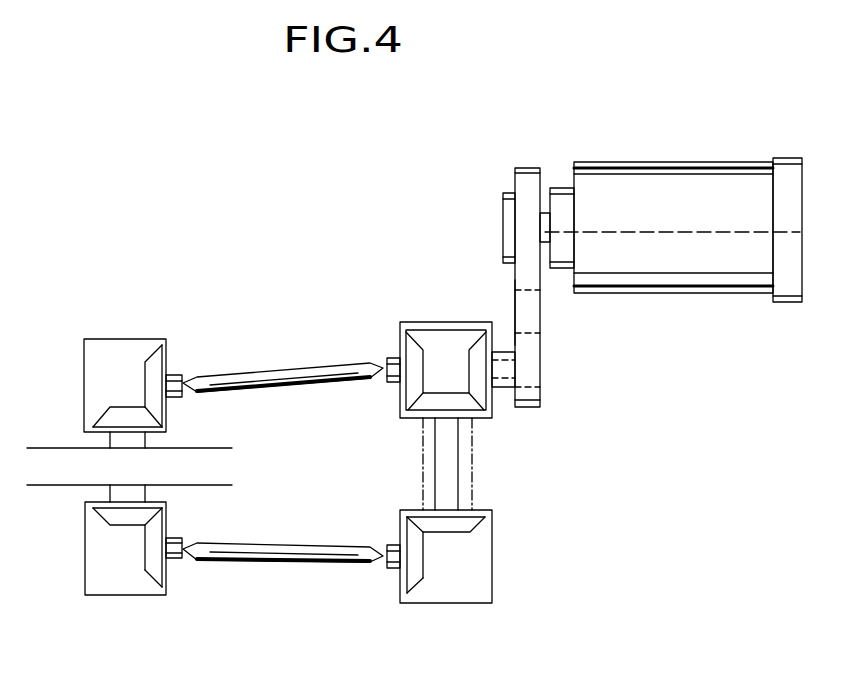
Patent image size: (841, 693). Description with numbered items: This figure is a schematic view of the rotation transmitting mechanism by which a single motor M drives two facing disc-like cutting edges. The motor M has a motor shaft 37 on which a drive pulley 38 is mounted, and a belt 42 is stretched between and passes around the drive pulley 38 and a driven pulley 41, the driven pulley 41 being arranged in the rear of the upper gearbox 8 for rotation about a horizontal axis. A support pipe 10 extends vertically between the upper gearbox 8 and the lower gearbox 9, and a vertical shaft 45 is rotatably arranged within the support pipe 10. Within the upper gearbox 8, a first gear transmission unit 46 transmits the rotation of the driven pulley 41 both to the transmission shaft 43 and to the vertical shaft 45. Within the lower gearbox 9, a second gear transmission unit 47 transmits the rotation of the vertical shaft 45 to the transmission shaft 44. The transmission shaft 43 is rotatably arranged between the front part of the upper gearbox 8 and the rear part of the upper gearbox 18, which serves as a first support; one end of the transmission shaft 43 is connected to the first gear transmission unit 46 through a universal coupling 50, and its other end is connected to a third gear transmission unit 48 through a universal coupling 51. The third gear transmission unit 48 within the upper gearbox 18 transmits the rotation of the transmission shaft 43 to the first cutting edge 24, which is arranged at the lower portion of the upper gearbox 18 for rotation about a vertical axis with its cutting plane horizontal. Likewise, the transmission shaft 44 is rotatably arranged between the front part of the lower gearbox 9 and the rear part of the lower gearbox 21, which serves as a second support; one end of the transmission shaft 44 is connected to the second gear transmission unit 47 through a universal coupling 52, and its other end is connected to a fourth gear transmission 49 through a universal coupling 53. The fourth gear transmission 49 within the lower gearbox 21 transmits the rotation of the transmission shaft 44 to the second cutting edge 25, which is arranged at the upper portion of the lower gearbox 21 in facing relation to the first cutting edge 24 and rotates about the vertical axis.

The motor M is at (677, 161).
The motor shaft 37 is at (541, 180).
The drive pulley 38 is at (512, 186).
The belt 42 is at (527, 310).
The driven pulley 41 is at (527, 378).
The upper gearbox 8 is at (418, 322).
The first gear transmission unit 46 is at (456, 332).
The universal coupling 50 is at (374, 348).
The support pipe 10 is at (472, 443).
The vertical shaft 45 is at (460, 485).
The lower gearbox 9 is at (492, 570).
The second gear transmission unit 47 is at (459, 574).
The universal coupling 52 is at (380, 573).
The transmission shaft 43 is at (290, 371).
The transmission shaft 44 is at (280, 565).
The upper gearbox 18 is at (84, 372).
The third gear transmission unit 48 is at (124, 355).
The universal coupling 51 is at (186, 366).
The first cutting edge 24 is at (46, 448).
The second cutting edge 25 is at (36, 485).
The lower gearbox 21 is at (85, 567).
The fourth gear transmission 49 is at (113, 572).
The universal coupling 53 is at (187, 578).